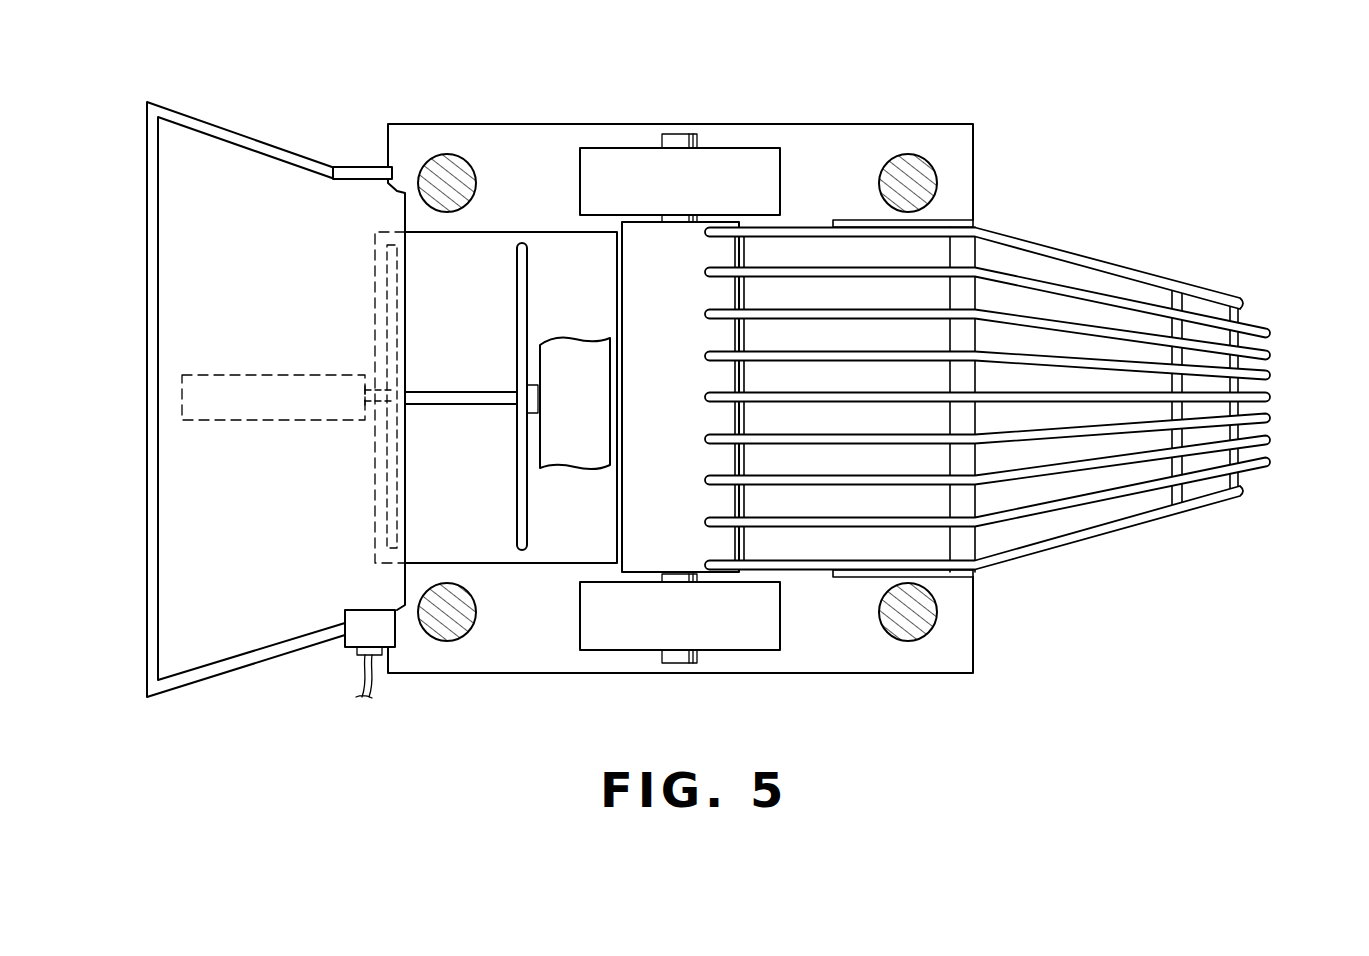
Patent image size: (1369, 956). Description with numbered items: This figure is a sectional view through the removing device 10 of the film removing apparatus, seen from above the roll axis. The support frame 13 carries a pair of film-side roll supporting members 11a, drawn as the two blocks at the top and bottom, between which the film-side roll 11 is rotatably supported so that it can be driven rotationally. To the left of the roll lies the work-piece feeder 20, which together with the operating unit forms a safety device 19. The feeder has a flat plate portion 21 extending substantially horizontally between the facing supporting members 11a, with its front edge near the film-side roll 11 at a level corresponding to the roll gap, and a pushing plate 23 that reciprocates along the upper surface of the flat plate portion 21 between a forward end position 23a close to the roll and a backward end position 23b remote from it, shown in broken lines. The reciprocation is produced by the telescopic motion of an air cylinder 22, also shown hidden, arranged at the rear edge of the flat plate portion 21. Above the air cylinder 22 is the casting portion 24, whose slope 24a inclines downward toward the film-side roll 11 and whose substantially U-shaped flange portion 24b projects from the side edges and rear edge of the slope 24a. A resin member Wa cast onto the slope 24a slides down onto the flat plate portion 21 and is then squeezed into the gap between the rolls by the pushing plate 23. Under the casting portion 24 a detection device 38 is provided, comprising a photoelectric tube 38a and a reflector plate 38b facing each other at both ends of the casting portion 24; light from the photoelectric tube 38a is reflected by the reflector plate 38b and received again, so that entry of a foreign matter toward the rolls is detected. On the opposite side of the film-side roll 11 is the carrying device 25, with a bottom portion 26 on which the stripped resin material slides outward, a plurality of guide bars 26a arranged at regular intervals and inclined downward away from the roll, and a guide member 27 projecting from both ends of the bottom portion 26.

The removing device 10 is at (912, 96).
The film-side roll 11 is at (637, 507).
The film-side roll supporting members 11a is at (745, 162).
The support frame 13 is at (837, 658).
The safety device 19 is at (366, 132).
The work-piece feeder 20 is at (343, 112).
The flat plate portion 21 is at (485, 248).
The air cylinder 22 is at (245, 420).
The pushing plate 23 is at (518, 485).
The forward end position 23a is at (522, 552).
The backward end position 23b is at (387, 475).
The casting portion 24 is at (246, 367).
The slope 24a is at (228, 187).
The flange portion 24b is at (201, 122).
The carrying device 25 is at (1124, 236).
The bottom portion 26 is at (1288, 330).
The guide bars 26a is at (1085, 367).
The guide member 27 is at (1207, 290).
The detection device 38 is at (333, 643).
The photoelectric tube 38a is at (357, 622).
The reflector plate 38b is at (370, 170).
The resin member Wa is at (577, 363).